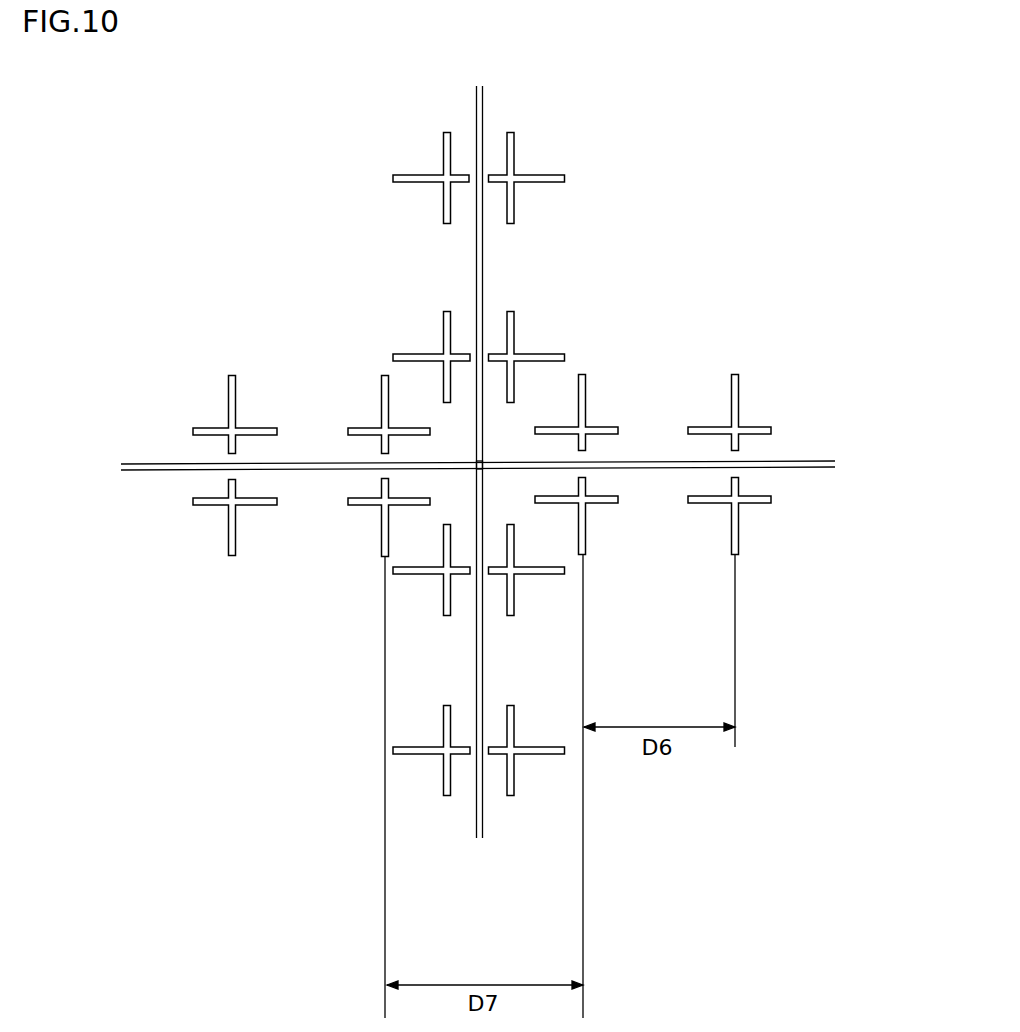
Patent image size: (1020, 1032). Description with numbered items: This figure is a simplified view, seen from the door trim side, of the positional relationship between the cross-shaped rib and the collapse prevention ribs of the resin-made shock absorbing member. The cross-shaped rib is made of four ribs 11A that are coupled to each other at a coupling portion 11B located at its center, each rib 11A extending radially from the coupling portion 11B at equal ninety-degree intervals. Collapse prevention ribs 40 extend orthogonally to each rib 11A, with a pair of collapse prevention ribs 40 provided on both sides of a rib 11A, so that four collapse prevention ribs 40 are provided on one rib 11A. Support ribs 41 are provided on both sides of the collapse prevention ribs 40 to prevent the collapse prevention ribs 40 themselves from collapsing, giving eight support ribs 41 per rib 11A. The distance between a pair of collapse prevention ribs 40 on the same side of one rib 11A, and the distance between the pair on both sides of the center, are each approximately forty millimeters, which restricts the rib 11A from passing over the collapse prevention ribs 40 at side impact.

The rib 11A is at (485, 97).
The coupling portion 11B is at (483, 463).
The collapse prevention rib 40 is at (396, 176).
The support rib 41 is at (443, 140).